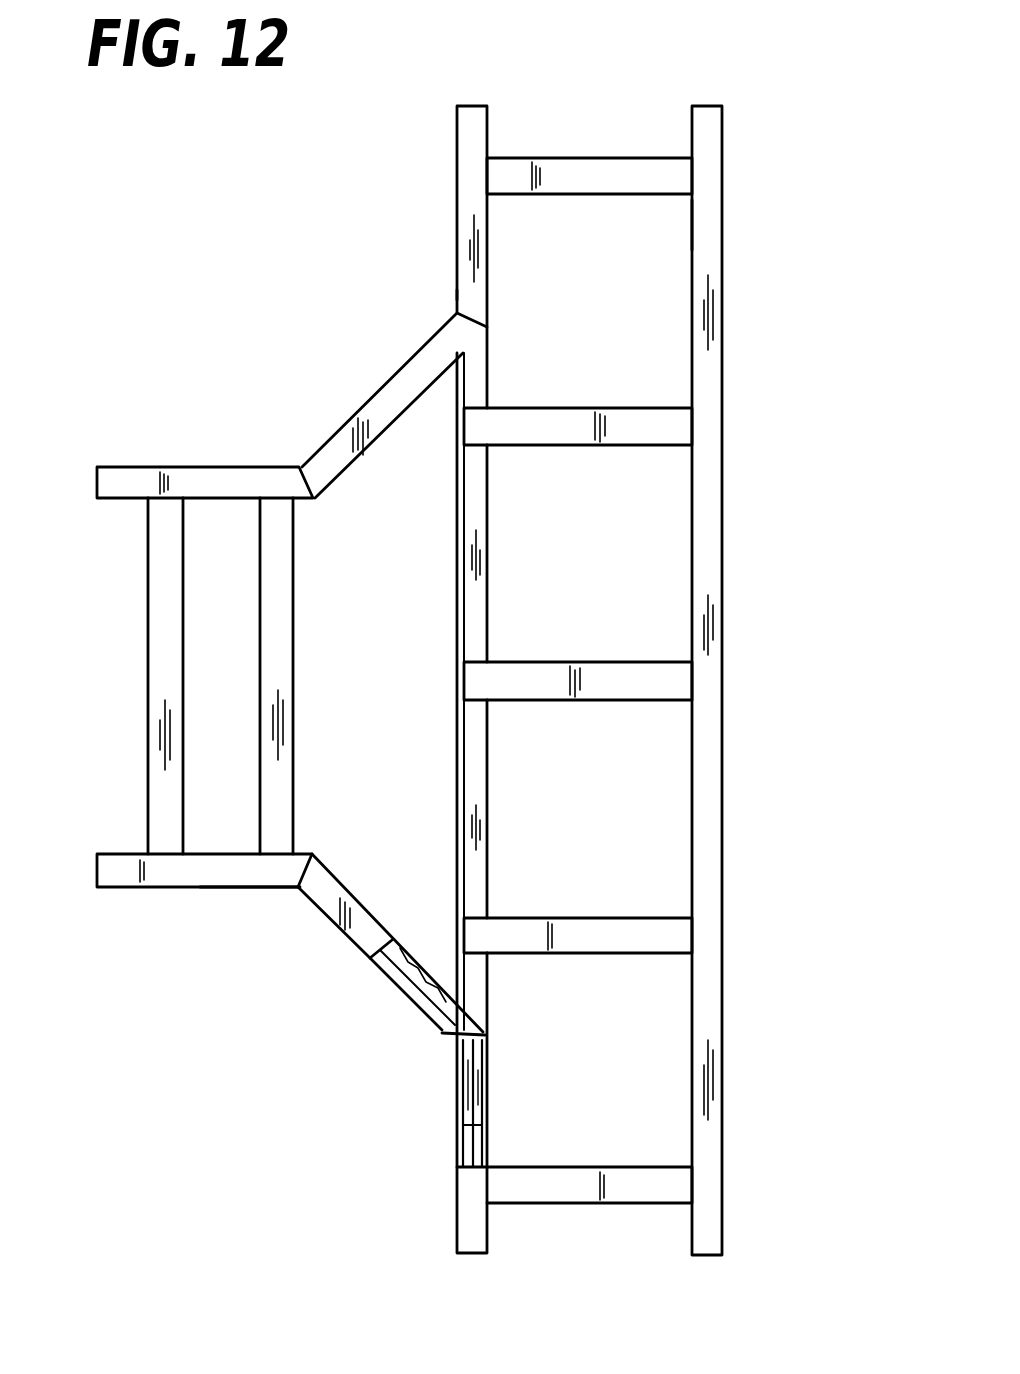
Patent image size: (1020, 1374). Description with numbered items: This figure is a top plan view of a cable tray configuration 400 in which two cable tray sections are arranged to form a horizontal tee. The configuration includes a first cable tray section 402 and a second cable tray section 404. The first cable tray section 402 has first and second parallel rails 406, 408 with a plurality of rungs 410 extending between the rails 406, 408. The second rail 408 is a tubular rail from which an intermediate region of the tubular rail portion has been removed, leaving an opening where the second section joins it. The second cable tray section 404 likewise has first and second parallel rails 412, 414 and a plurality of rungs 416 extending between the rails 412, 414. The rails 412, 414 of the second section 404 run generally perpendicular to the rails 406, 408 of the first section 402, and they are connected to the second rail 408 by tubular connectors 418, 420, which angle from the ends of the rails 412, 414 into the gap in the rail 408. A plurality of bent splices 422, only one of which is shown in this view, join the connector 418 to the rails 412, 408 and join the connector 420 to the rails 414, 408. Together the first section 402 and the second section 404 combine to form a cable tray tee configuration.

The cable tray configuration 400 is at (392, 293).
The first cable tray section 402 is at (724, 225).
The second cable tray section 404 is at (247, 889).
The first rail 406 is at (715, 145).
The second rail 408 is at (475, 128).
The rungs 410 is at (640, 190).
The first rail 412 is at (205, 478).
The second rail 414 is at (122, 882).
The rungs 416 is at (275, 632).
The tubular connector 418 is at (392, 388).
The tubular connector 420 is at (365, 945).
The bent splice 422 is at (445, 1036).